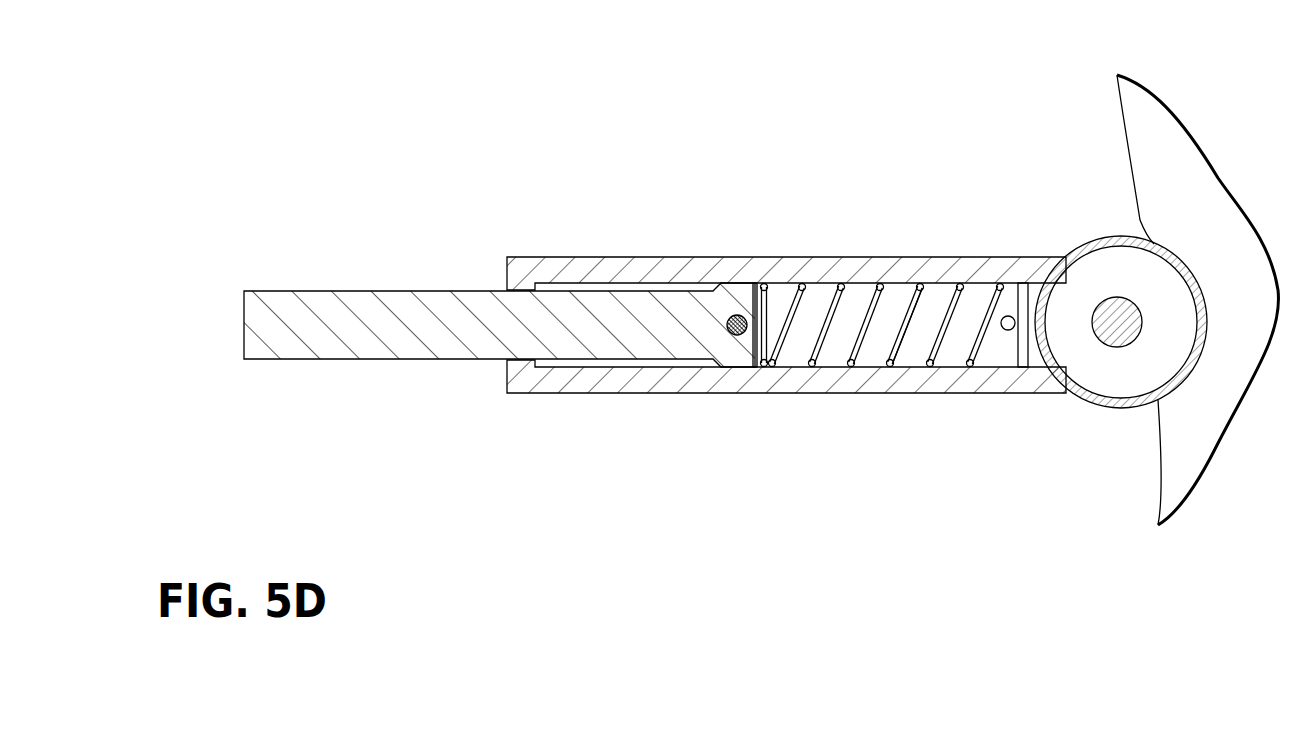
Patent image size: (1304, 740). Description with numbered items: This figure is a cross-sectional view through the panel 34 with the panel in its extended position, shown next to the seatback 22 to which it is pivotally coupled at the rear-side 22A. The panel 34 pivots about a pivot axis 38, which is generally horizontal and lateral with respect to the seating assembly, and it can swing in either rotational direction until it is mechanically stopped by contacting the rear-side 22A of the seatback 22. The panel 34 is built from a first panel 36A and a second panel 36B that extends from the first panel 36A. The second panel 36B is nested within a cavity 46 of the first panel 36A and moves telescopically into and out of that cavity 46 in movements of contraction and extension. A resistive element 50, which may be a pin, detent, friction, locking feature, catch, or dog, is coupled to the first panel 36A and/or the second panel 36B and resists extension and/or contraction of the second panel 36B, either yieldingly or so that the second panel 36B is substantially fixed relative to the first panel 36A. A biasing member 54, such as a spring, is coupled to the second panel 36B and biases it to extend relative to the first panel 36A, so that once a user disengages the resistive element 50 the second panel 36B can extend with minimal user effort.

The seatback 22 is at (1202, 196).
The rear-side 22A is at (1125, 147).
The panel 34 is at (660, 257).
The first panel 36A is at (767, 393).
The second panel 36B is at (403, 318).
The pivot axis 38 is at (1117, 328).
The cavity 46 is at (898, 300).
The resistive element 50 is at (527, 288).
The biasing member 54 is at (935, 333).